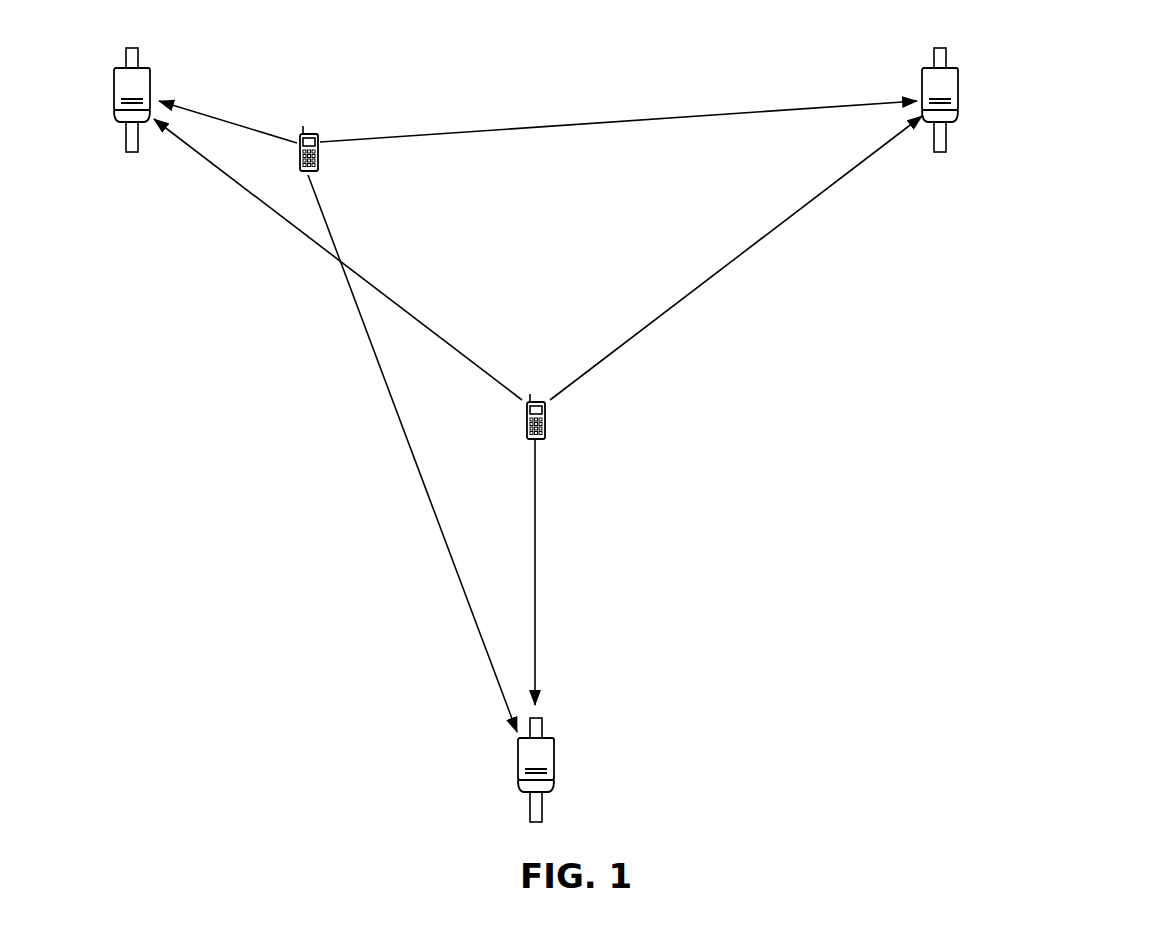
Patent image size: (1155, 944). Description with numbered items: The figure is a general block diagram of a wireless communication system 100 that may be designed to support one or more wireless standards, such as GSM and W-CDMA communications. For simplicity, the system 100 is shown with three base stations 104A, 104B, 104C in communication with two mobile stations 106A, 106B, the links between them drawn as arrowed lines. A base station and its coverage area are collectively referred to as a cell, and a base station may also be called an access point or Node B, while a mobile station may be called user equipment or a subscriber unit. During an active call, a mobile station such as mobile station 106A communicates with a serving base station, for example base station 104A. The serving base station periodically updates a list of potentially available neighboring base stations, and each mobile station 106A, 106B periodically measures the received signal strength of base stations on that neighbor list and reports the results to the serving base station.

The wireless communication system 100 is at (1066, 280).
The base station 104A is at (144, 67).
The base station 104B is at (953, 67).
The base station 104C is at (554, 737).
The mobile station 106A is at (310, 132).
The mobile station 106B is at (530, 438).